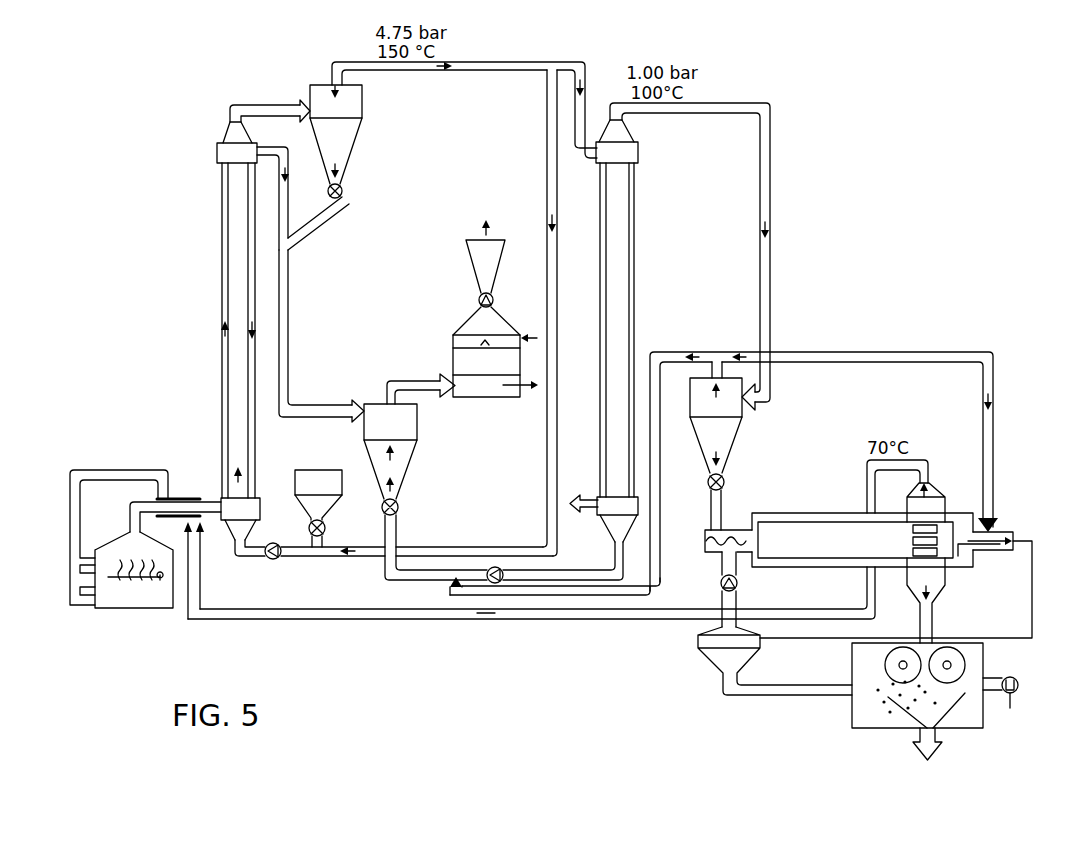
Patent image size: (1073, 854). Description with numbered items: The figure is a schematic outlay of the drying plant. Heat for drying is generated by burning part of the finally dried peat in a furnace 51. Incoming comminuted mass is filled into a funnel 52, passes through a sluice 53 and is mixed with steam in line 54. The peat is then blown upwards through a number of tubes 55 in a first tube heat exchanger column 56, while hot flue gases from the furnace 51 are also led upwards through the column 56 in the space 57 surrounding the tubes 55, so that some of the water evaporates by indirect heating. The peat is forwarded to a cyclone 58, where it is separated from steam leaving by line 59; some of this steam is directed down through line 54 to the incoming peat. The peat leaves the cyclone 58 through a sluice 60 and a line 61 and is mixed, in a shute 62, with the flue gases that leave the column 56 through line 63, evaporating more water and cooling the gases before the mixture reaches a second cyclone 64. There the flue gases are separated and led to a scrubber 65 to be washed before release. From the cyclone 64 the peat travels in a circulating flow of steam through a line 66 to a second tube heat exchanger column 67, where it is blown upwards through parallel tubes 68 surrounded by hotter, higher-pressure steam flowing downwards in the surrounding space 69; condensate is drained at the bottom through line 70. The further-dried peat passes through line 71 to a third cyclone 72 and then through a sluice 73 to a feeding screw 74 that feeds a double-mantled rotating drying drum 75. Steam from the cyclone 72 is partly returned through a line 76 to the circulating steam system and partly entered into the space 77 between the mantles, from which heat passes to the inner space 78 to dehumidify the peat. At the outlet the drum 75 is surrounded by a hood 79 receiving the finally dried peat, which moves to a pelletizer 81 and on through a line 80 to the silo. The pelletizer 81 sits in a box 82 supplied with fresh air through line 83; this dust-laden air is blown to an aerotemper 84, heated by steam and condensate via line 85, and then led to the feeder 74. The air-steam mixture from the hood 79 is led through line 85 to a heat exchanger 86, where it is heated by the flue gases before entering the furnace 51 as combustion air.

The furnace 51 is at (122, 602).
The funnel 52 is at (312, 476).
The sluice 53 is at (326, 528).
The line 54 is at (305, 555).
The tubes 55 is at (240, 320).
The first tube heat exchanger column 56 is at (222, 240).
The space 57 is at (222, 207).
The cyclone 58 is at (362, 110).
The line 59 is at (524, 62).
The sluice 60 is at (344, 195).
The line 61 is at (316, 221).
The shute 62 is at (288, 310).
The line 63 is at (288, 178).
The second cyclone 64 is at (410, 428).
The scrubber 65 is at (455, 353).
The line 66 is at (587, 585).
The second tube heat exchanger column 67 is at (642, 317).
The parallel tubes 68 is at (629, 215).
The surrounding space 69 is at (634, 245).
The line 70 is at (596, 496).
The line 71 is at (770, 253).
The third cyclone 72 is at (732, 414).
The sluice 73 is at (724, 477).
The feeding screw 74 is at (706, 530).
The drying drum 75 is at (771, 515).
The line 76 is at (660, 480).
The space 77 is at (803, 520).
The inner space 78 is at (835, 530).
The hood 79 is at (942, 500).
The line 80 is at (936, 735).
The pelletizer 81 is at (892, 663).
The box 82 is at (852, 705).
The line 83 is at (992, 677).
The aerotemper 84 is at (698, 641).
The line 85 is at (505, 619).
The heat exchanger 86 is at (190, 494).